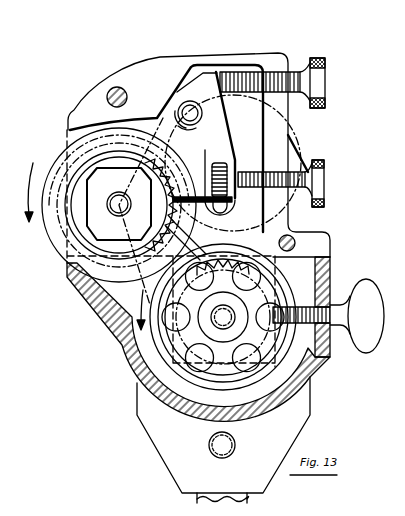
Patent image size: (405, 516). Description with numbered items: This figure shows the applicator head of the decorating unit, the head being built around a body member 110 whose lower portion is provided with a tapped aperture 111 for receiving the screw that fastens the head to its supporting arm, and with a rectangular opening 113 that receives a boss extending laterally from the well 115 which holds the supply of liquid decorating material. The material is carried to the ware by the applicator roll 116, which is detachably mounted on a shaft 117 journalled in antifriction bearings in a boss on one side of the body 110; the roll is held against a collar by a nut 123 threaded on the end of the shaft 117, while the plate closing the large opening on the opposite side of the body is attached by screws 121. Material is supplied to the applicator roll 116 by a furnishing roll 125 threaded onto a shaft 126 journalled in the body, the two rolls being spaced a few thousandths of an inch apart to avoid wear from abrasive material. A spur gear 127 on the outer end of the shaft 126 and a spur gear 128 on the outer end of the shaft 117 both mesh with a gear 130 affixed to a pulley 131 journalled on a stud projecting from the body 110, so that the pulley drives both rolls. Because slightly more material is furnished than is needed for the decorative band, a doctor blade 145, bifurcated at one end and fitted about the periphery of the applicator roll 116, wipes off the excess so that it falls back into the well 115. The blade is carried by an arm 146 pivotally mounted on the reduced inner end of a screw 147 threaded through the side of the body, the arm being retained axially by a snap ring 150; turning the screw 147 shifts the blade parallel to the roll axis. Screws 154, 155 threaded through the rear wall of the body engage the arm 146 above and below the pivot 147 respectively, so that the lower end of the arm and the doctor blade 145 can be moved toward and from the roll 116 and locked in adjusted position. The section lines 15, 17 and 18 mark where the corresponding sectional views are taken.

The body member 110 is at (320, 233).
The tapped aperture 111 is at (305, 345).
The rectangular opening 113 is at (175, 407).
The well 115 is at (312, 368).
The applicator roll 116 is at (53, 231).
The shaft 117 is at (118, 214).
The screws 121 is at (125, 87).
The nut 123 is at (60, 166).
The furnishing roll 125 is at (283, 292).
The shaft 126 is at (229, 322).
The spur gear 127 is at (216, 260).
The spur gear 128 is at (161, 163).
The gear 130 is at (231, 142).
The pulley 131 is at (296, 152).
The doctor blade 145 is at (214, 208).
The arm 146 is at (230, 160).
The screw 147 is at (186, 105).
The snap ring 150 is at (183, 128).
The screw 154 is at (327, 70).
The screw 155 is at (325, 176).
The section line 15- 15 is at (65, 113).
The section line 17- 17 is at (117, 62).
The section line 18- 18 is at (227, 52).